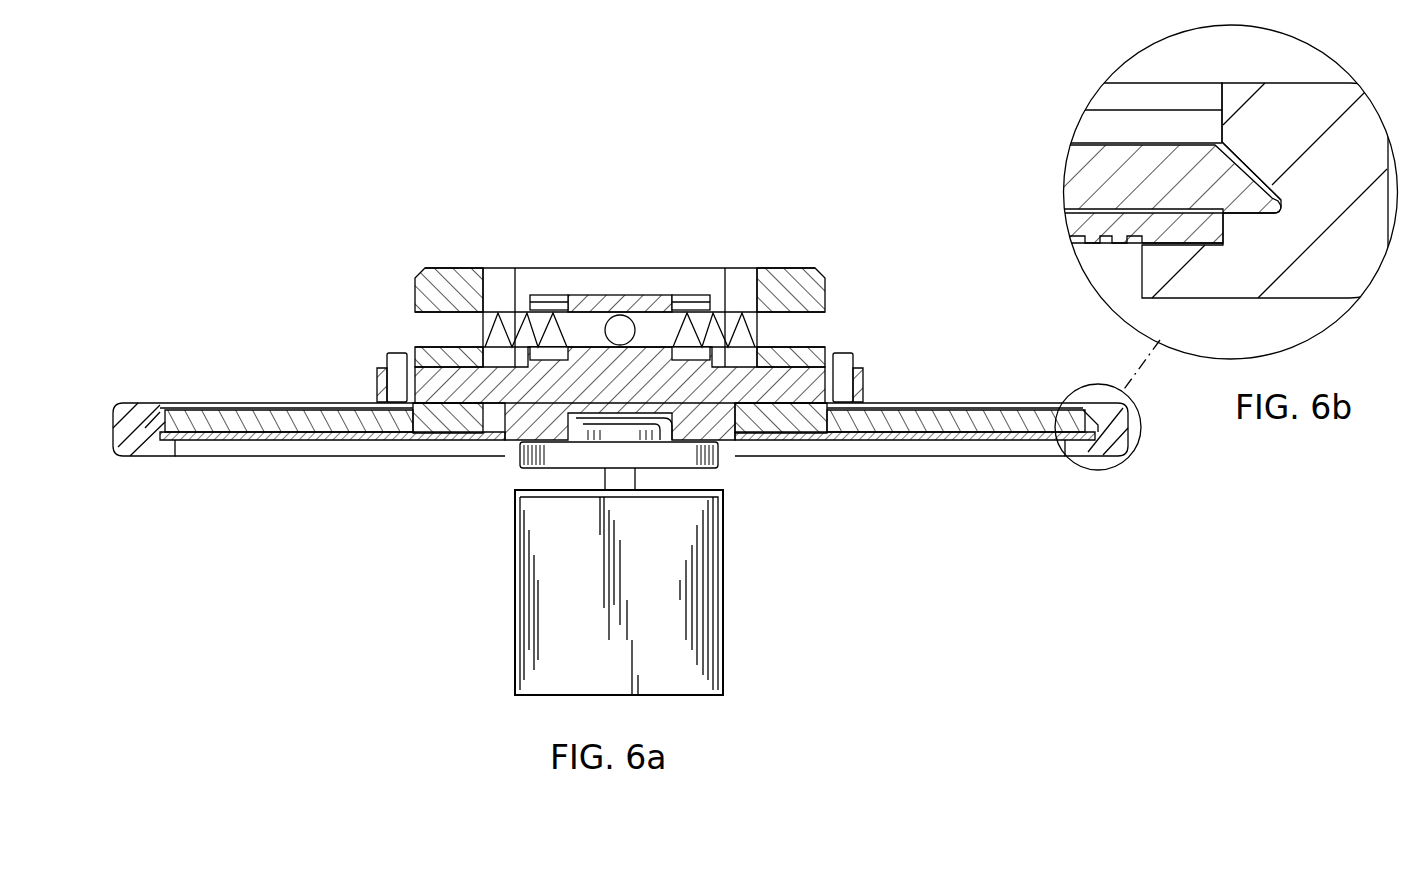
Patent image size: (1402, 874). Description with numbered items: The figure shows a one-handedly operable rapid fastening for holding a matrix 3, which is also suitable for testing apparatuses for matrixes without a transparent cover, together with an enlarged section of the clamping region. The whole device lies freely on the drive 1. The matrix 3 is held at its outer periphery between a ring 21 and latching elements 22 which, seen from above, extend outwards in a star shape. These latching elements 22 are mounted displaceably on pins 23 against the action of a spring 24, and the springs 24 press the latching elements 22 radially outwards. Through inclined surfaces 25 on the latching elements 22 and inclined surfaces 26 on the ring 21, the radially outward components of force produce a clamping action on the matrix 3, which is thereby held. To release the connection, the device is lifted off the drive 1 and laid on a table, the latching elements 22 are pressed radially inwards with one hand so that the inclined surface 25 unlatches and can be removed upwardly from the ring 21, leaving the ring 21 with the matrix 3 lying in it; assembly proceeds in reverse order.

In FIG. 6A, the drive 1 is at (712, 644).
In FIG. 6A, the matrix 3 is at (884, 440).
In FIG. 6B, the matrix 3 is at (1132, 240).
In FIG. 6A, the ring 21 is at (113, 430).
In FIG. 6B, the ring 21 is at (1228, 285).
In FIG. 6A, the latching elements 22 is at (452, 272).
In FIG. 6B, the latching elements 22 is at (1278, 192).
In FIG. 6A, the pins 23 is at (447, 327).
In FIG. 6A, the spring 24 is at (562, 303).
In FIG. 6B, the inclined surfaces on the latching elements 25 is at (1232, 147).
In FIG. 6B, the inclined surfaces on the ring 26 is at (1252, 190).